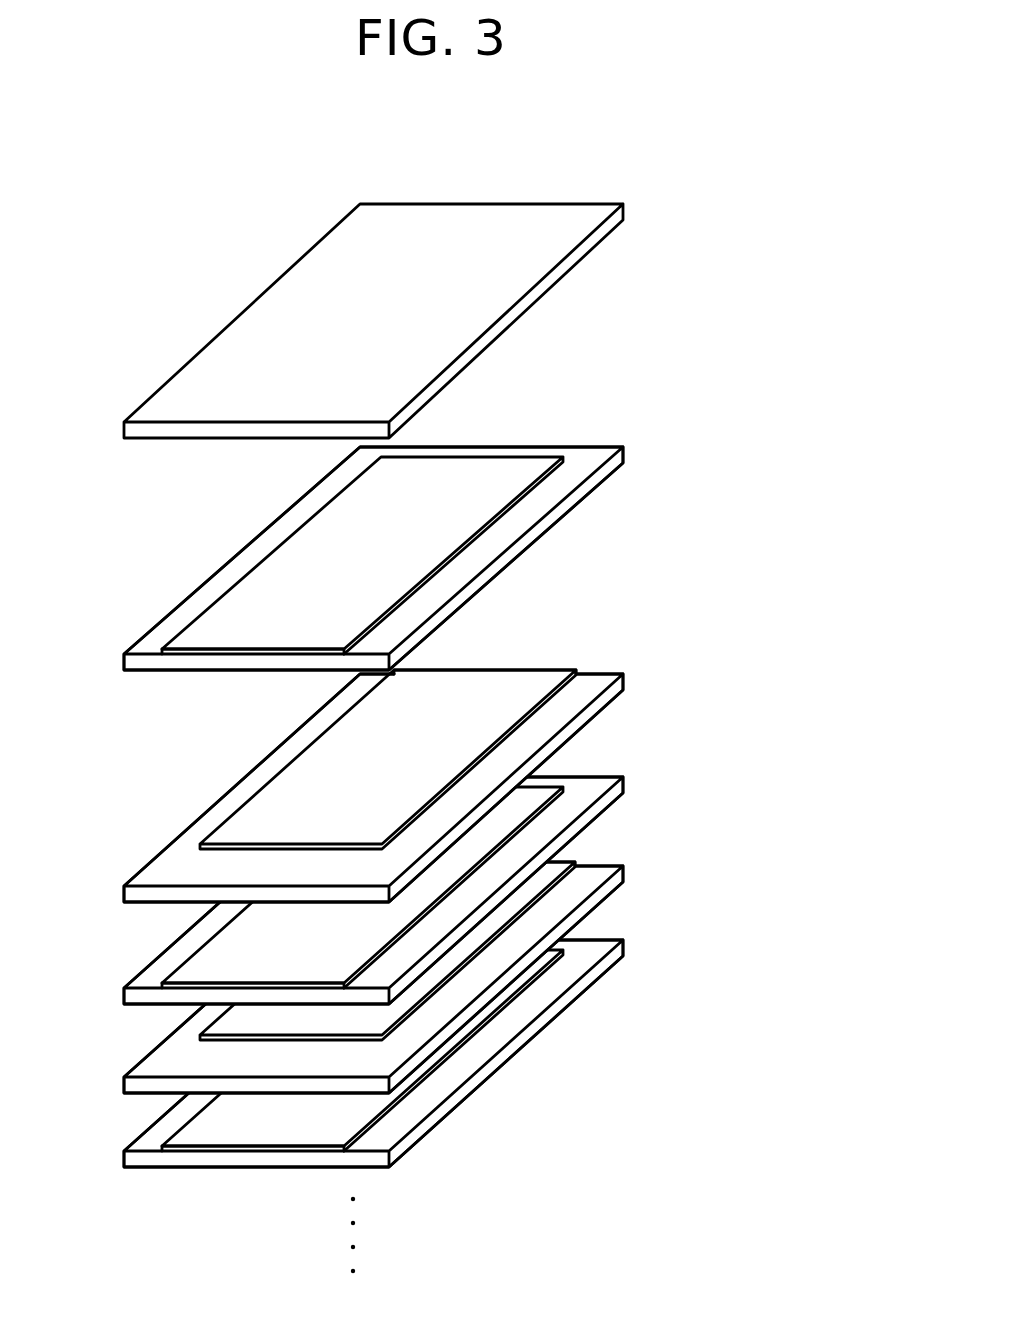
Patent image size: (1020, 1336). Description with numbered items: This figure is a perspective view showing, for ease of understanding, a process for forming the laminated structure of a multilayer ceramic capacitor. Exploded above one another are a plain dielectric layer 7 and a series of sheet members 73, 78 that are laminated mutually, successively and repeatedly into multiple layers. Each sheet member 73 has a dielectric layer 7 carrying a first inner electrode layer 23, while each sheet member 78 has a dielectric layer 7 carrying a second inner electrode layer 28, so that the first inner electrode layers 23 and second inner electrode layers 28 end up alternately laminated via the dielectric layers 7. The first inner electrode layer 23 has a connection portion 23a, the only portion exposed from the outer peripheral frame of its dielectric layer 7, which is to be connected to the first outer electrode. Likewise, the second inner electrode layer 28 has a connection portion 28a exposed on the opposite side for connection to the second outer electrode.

The dielectric layer 7 is at (587, 222).
The first inner electrode layer 23 is at (498, 470).
The connection portion 23a is at (207, 653).
The second inner electrode layer 28 is at (493, 687).
The connection portion 28a is at (548, 672).
The sheet member 73 is at (747, 900).
The sheet member 78 is at (747, 818).